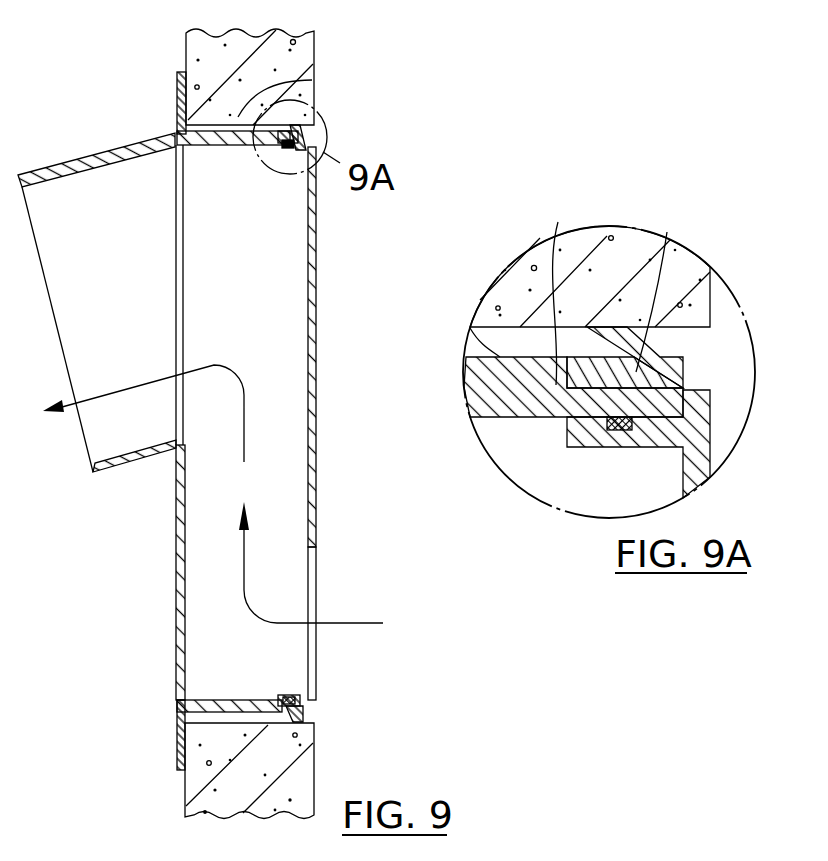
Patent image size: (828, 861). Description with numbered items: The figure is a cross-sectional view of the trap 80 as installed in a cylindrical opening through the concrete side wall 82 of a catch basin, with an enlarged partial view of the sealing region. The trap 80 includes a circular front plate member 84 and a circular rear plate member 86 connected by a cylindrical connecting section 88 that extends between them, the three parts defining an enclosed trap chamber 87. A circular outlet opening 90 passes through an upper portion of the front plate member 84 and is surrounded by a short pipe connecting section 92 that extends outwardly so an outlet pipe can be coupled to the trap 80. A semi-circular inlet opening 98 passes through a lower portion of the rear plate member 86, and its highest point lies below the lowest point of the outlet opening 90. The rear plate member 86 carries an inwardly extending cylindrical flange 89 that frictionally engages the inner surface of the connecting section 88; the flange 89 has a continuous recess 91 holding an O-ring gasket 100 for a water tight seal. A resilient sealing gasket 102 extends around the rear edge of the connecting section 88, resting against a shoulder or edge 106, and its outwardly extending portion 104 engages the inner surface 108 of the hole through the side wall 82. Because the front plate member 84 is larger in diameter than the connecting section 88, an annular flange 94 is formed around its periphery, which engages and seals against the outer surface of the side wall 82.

In FIG. 9, the trap 80 is at (125, 109).
In FIG. 9, the concrete side wall 82 is at (300, 58).
In FIG. 9A, the concrete side wall 82 is at (697, 278).
In FIG. 9, the front plate member 84 is at (176, 507).
In FIG. 9, the rear plate member 86 is at (315, 303).
In FIG. 9A, the rear plate member 86 is at (710, 452).
In FIG. 9, the trap chamber 87 is at (288, 380).
In FIG. 9, the cylindrical connecting section 88 is at (213, 147).
In FIG. 9A, the cylindrical connecting section 88 is at (490, 363).
In FIG. 9, the cylindrical flange 89 is at (280, 695).
In FIG. 9A, the cylindrical flange 89 is at (636, 447).
In FIG. 9, the outlet opening 90 is at (183, 261).
In FIG. 9A, the continuous recess 91 is at (598, 424).
In FIG. 9, the pipe connecting section 92 is at (46, 168).
In FIG. 9, the annular flange 94 is at (177, 82).
In FIG. 9, the inlet opening 98 is at (315, 598).
In FIG. 9, the O-ring gasket 100 is at (294, 697).
In FIG. 9A, the O-ring gasket 100 is at (652, 387).
In FIG. 9, the resilient sealing gasket 102 is at (306, 717).
In FIG. 9A, the resilient sealing gasket 102 is at (655, 357).
In FIG. 9A, the outwardly extending portion 104 is at (665, 288).
In FIG. 9A, the shoulder or edge 106 is at (500, 280).
In FIG. 9, the inner surface 108 is at (240, 113).
In FIG. 9A, the inner surface 108 is at (566, 290).